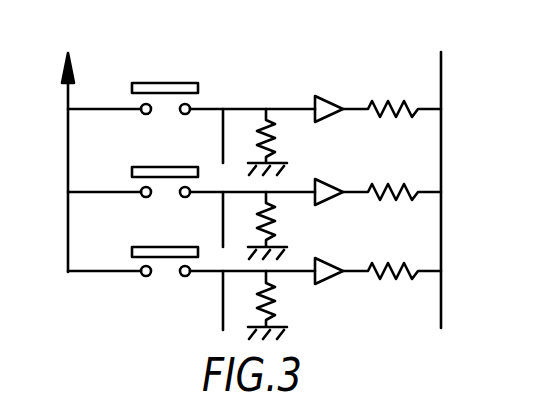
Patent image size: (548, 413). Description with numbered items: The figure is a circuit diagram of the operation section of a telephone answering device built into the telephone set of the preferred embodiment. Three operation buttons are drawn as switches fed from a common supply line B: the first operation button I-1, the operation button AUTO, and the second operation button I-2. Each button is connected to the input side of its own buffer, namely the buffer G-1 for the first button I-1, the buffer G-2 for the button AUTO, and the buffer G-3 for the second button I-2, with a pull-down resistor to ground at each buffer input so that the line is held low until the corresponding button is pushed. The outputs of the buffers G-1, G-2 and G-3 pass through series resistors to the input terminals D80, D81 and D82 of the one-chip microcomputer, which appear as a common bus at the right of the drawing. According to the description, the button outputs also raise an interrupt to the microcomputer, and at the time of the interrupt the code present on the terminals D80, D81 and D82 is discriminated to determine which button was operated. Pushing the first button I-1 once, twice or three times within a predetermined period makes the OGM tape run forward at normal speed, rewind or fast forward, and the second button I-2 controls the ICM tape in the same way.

The +B supply voltage B is at (59, 149).
The operation button I-1 is at (191, 83).
The operation button AUTO is at (191, 168).
The operation button I-2 is at (191, 247).
The buffer G-1 is at (331, 93).
The buffer G-2 is at (331, 176).
The buffer G-3 is at (331, 256).
The input terminal D80 is at (414, 110).
The input terminal D81 is at (414, 191).
The input terminal D82 is at (414, 270).